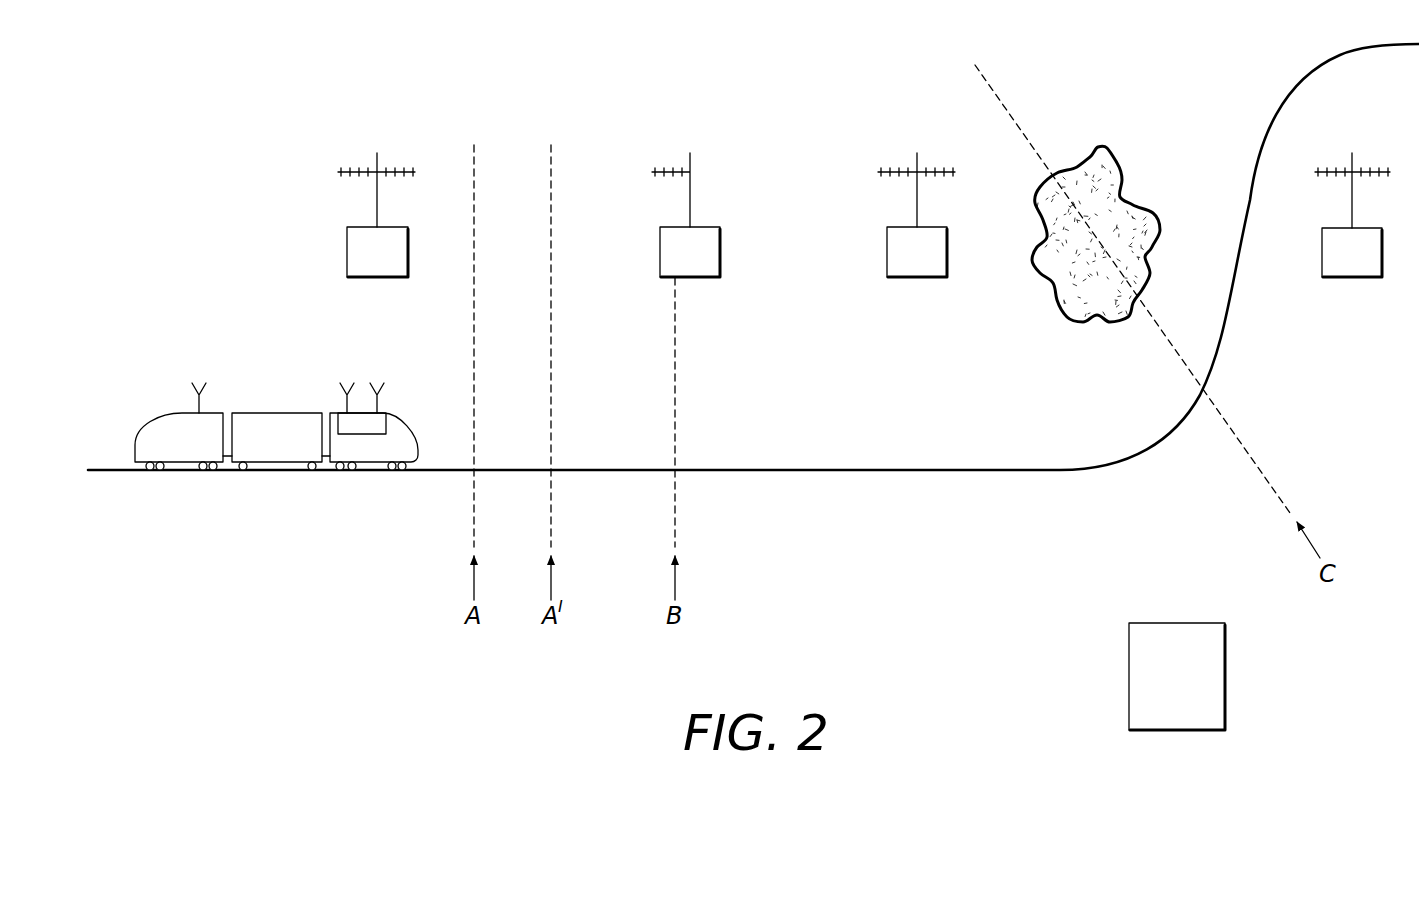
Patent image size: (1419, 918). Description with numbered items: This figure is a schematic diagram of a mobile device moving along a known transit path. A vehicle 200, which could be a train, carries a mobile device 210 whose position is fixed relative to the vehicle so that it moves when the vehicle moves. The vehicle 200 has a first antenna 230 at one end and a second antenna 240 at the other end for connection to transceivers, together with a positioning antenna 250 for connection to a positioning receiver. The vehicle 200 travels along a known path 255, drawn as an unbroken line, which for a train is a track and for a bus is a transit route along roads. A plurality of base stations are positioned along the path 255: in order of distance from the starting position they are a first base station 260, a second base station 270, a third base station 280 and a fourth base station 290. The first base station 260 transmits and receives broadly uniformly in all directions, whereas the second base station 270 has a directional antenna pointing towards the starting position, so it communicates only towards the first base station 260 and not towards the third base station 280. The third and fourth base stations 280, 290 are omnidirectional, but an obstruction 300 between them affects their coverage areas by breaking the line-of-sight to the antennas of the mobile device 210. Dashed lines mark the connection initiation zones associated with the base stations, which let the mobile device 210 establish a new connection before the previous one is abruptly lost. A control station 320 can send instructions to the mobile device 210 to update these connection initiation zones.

The vehicle 200 is at (150, 389).
The mobile device 210 is at (378, 423).
The first antenna 230 is at (377, 383).
The second antenna 240 is at (199, 383).
The positioning antenna 250 is at (347, 383).
The known path 255 is at (437, 472).
The first base station 260 is at (356, 141).
The second base station 270 is at (670, 141).
The third base station 280 is at (896, 141).
The fourth base station 290 is at (1373, 141).
The obstruction 300 is at (1111, 128).
The control station 320 is at (1177, 676).